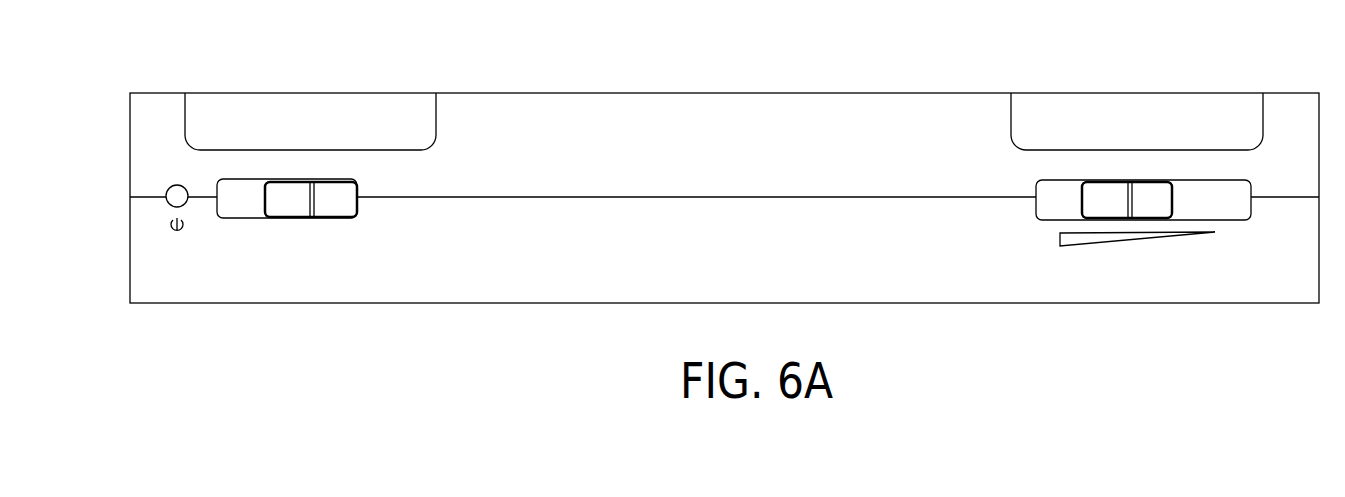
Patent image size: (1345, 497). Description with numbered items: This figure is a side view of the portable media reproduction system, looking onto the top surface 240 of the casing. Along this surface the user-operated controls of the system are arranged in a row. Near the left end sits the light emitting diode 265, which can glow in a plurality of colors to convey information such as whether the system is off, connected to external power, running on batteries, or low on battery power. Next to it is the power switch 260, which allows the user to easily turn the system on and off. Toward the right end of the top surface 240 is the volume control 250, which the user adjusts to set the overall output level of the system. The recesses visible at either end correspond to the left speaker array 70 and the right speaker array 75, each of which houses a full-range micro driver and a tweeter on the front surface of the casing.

The top surface 240 is at (933, 280).
The right speaker array 75 is at (332, 110).
The left speaker array 70 is at (1126, 113).
The light emitting diode 265 is at (168, 203).
The power switch 260 is at (291, 203).
The volume control 250 is at (1144, 207).